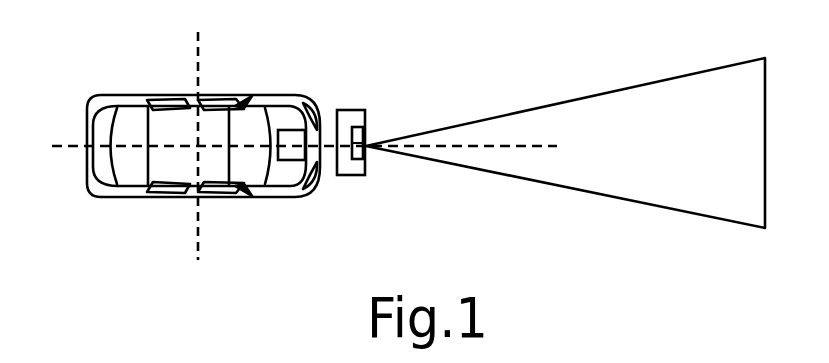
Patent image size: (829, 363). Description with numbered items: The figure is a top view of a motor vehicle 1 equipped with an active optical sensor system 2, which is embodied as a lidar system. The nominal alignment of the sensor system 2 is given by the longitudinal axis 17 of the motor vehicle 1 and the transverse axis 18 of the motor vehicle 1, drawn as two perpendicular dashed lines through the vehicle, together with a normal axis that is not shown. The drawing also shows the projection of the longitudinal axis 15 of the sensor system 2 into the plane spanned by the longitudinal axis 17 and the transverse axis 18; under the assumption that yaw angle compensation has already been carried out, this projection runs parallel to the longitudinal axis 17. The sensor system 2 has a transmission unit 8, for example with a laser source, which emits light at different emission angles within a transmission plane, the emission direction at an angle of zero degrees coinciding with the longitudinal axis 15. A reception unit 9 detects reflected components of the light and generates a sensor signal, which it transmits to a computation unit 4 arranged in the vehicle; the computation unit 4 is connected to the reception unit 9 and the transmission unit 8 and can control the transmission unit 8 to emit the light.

The motor vehicle 1 is at (185, 203).
The active optical sensor system 2 is at (341, 244).
The computation unit 4 is at (293, 130).
The transmission unit 8 is at (358, 128).
The reception unit 9 is at (358, 158).
The longitudinal axis of the sensor system 15 is at (557, 146).
The longitudinal axis of the motor vehicle 17 is at (72, 148).
The transverse axis of the motor vehicle 18 is at (196, 50).